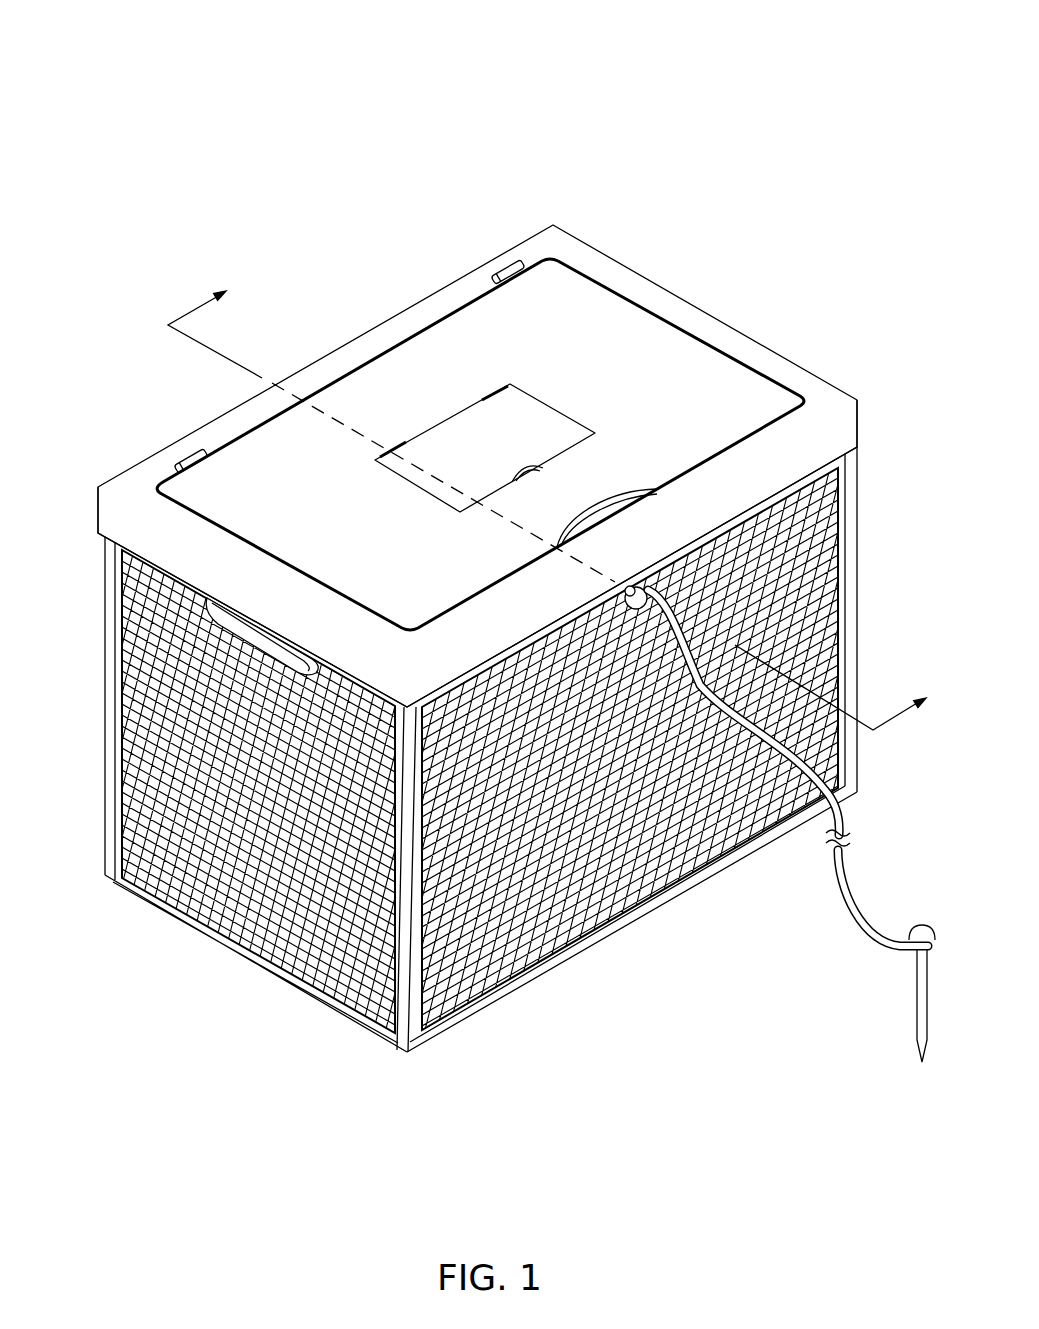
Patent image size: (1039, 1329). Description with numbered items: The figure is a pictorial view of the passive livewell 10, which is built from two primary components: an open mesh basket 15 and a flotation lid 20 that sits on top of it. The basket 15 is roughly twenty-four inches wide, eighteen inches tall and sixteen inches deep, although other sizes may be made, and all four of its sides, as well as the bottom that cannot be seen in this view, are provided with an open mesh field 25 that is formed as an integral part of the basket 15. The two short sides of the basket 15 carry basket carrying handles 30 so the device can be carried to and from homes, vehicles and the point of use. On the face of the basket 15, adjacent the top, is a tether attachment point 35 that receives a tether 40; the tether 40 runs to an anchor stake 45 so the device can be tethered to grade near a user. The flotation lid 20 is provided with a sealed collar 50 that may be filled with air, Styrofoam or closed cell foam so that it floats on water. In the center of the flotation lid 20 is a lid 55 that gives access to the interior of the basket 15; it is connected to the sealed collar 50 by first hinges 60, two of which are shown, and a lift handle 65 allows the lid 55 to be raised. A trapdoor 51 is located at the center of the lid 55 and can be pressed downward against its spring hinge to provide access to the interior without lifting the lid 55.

The passive livewell 10 is at (121, 165).
The open mesh basket 15 is at (92, 877).
The flotation lid 20 is at (92, 482).
The open mesh field 25 is at (262, 820).
The basket carrying handle 30 is at (260, 648).
The tether attachment point 35 is at (660, 583).
The tether 40 is at (862, 922).
The anchor stake 45 is at (920, 1040).
The sealed collar 50 is at (508, 262).
The trapdoor 51 is at (513, 423).
The lid 55 is at (587, 367).
The first hinge 60 is at (500, 268).
The lift handle 65 is at (622, 484).